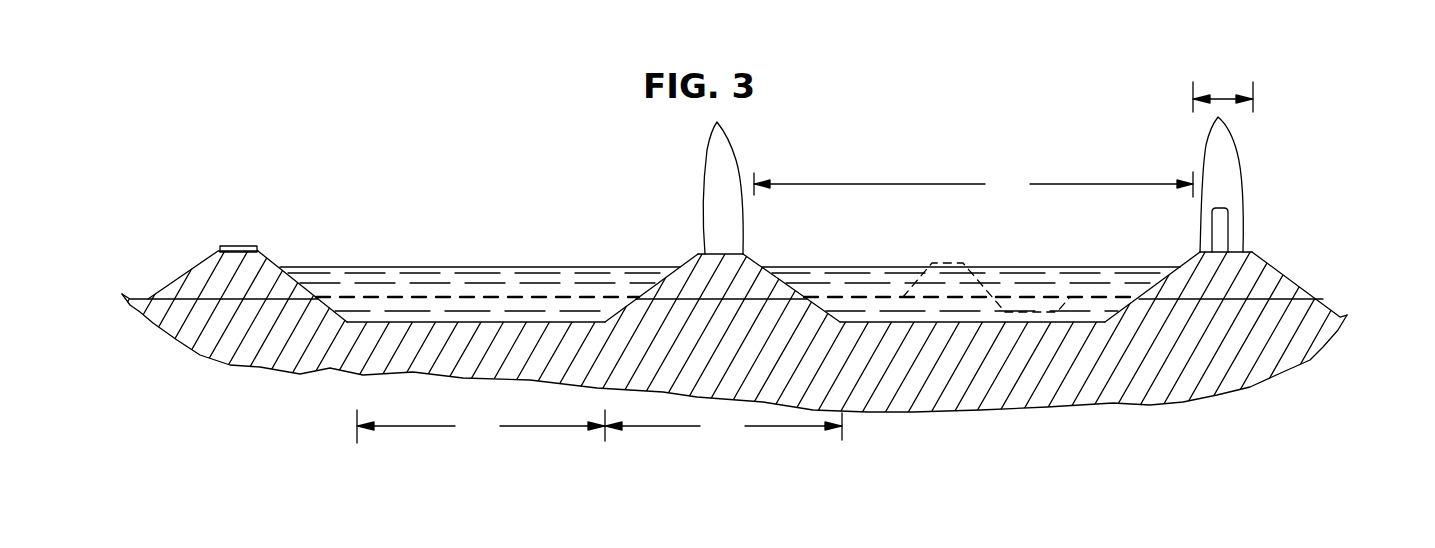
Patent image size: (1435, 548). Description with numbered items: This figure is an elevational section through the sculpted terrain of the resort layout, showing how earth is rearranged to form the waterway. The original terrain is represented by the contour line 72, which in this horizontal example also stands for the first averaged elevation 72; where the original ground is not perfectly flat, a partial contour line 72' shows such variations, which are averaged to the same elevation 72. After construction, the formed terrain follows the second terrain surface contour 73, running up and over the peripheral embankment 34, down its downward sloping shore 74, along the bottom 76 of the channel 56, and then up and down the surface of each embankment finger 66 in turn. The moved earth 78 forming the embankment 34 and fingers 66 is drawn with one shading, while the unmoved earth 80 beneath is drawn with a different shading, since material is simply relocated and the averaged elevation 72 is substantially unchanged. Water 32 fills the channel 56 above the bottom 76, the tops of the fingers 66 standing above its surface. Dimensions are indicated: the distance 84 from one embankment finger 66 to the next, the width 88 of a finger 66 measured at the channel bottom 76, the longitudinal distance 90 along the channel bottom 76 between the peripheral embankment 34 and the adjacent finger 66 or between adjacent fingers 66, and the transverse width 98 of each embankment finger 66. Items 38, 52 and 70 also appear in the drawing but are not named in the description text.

The water 32 is at (510, 268).
The peripheral embankment 34 is at (203, 258).
The post 38 is at (1222, 226).
The cap 52 is at (233, 247).
The channel 56 is at (422, 250).
The embankment finger 66 is at (758, 259).
The plant 70 is at (721, 160).
The first averaged elevation 72 is at (765, 281).
The partial contour line 72' is at (986, 273).
The second terrain surface contour 73 is at (625, 303).
The downward sloping shore 74 is at (300, 275).
The channel bottom 76 is at (444, 317).
The moved earth 78 is at (177, 288).
The unmoved earth 80 is at (223, 350).
The distance between embankment fingers 84 is at (973, 185).
The width of embankment fingers 88 is at (723, 427).
The longitudinal distance 90 is at (481, 426).
The transverse width of embankment finger 98 is at (1222, 95).